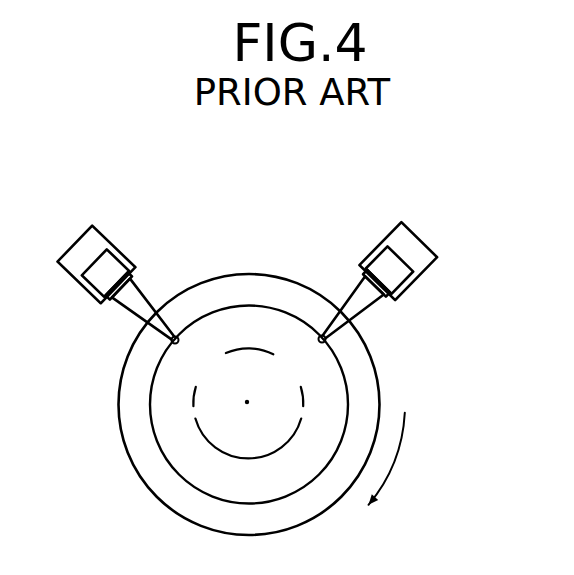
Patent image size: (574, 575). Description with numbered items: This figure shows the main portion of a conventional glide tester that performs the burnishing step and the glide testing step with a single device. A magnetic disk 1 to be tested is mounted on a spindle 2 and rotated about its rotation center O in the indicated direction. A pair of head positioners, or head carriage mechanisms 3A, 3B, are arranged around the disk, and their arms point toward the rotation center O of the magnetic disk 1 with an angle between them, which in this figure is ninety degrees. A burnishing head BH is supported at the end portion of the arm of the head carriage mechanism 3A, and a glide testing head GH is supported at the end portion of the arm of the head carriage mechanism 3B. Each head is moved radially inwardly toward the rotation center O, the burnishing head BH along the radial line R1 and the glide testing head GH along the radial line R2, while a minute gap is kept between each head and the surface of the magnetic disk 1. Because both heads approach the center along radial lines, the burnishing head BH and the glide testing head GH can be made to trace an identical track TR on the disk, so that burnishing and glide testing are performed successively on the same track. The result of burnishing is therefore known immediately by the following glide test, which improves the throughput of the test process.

The magnetic disk 1 is at (252, 287).
The spindle 2 is at (215, 415).
The head carriage mechanism 3A is at (417, 242).
The head carriage mechanism 3B is at (96, 237).
The glide testing head GH is at (171, 341).
The burnishing head BH is at (326, 338).
The rotation center O is at (251, 418).
The radial line R1 is at (254, 400).
The radial line R2 is at (243, 400).
The track TR is at (320, 473).